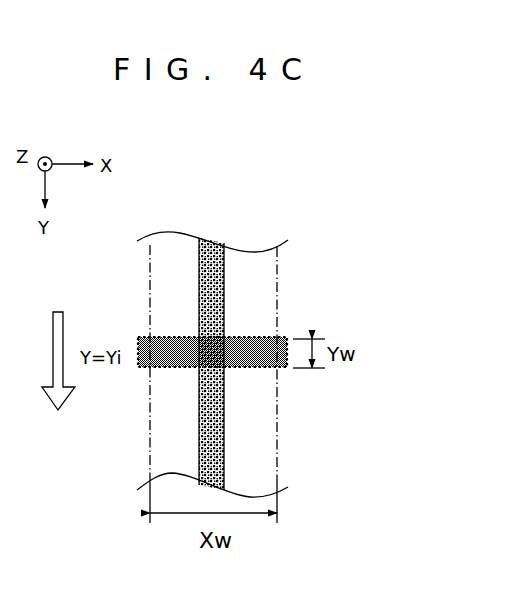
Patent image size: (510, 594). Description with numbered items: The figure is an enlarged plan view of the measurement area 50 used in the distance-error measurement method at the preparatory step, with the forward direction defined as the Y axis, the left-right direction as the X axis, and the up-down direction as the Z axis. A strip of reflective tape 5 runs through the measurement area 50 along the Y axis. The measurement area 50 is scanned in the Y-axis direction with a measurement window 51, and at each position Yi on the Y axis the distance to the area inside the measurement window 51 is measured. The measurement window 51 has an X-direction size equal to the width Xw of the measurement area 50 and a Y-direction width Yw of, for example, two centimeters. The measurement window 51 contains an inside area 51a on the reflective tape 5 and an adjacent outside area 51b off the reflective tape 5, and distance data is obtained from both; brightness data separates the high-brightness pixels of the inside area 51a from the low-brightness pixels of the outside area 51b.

The reflective tape 5 is at (217, 240).
The measurement area 50 is at (149, 274).
The measurement window 51 is at (138, 344).
The inside area of the reflective tape 51a is at (210, 352).
The outside area of the reflective tape 51b is at (172, 354).